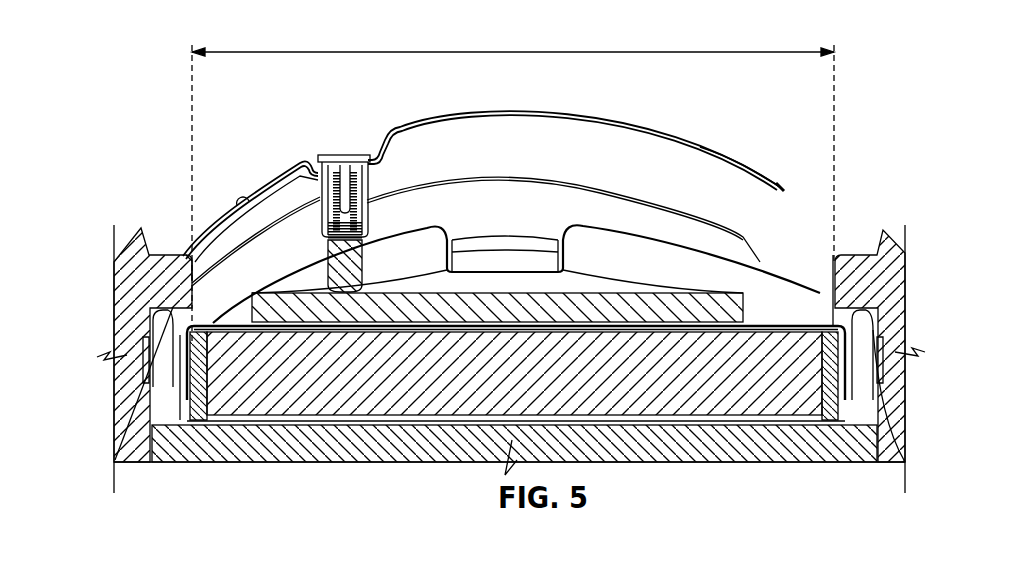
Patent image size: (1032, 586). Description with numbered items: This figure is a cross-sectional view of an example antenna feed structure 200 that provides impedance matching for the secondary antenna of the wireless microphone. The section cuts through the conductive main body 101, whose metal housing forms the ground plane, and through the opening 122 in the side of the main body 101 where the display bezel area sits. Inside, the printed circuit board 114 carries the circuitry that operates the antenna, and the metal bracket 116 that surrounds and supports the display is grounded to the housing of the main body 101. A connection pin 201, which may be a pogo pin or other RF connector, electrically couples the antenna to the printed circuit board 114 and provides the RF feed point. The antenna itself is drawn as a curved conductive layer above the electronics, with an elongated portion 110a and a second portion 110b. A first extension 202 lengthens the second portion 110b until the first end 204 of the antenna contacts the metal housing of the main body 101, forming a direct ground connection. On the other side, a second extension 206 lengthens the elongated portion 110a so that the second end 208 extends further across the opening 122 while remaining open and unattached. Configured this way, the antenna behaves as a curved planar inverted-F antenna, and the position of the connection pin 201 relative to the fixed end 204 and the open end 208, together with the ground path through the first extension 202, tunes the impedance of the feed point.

The main body 101 is at (133, 246).
The elongated portion 110a is at (537, 122).
The second portion 110b is at (226, 207).
The printed circuit board 114 is at (717, 307).
The bracket 116 is at (196, 442).
The main body opening 122 is at (513, 182).
The antenna feed structure 200 is at (252, 164).
The connection pin 201 is at (345, 153).
The first extension 202 is at (184, 186).
The first end 204 is at (213, 217).
The second extension 206 is at (718, 130).
The second end 208 is at (782, 190).